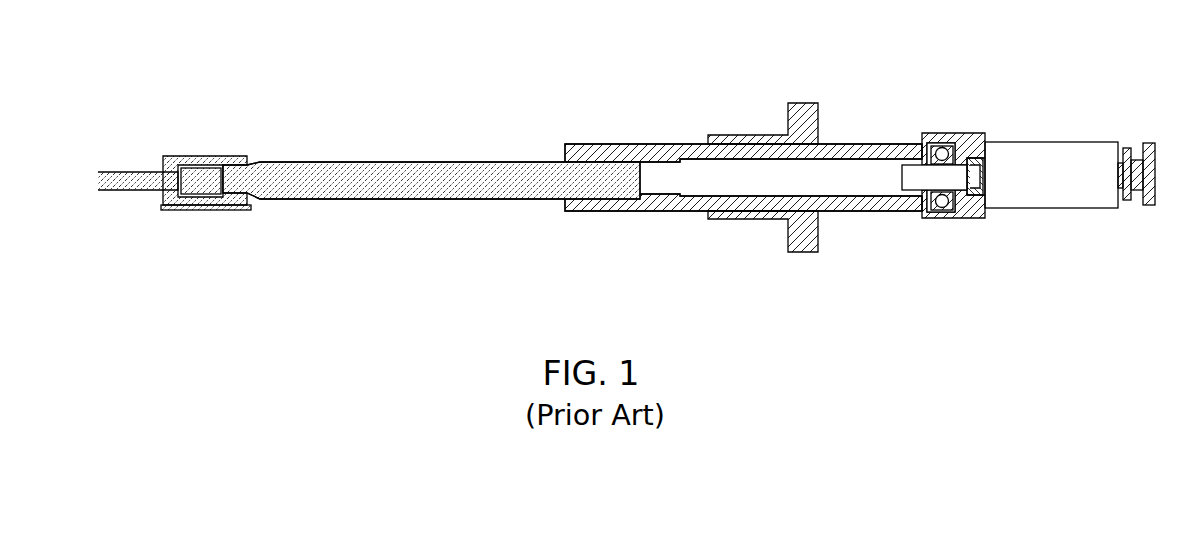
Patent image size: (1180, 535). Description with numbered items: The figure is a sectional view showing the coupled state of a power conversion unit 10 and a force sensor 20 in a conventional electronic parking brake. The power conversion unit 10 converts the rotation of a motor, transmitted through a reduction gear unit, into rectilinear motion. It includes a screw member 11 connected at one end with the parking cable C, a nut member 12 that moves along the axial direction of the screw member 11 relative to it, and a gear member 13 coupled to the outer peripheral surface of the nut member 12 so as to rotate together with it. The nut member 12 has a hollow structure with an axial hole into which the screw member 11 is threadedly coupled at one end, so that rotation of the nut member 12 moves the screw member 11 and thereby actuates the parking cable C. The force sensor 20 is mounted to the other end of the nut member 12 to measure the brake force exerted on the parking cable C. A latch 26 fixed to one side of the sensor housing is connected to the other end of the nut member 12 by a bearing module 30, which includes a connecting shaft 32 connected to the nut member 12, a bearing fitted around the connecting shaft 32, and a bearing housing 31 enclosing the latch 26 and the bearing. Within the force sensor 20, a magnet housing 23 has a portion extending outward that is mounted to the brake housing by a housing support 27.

The power conversion unit 10 is at (541, 141).
The screw member 11 is at (450, 196).
The nut member 12 is at (620, 201).
The gear member 13 is at (800, 112).
The force sensor 20 is at (1087, 150).
The magnet housing 23 is at (945, 136).
The latch 26 is at (982, 178).
The housing support 27 is at (1145, 207).
The bearing module 30 is at (934, 154).
The bearing housing 31 is at (944, 212).
The connecting shaft 32 is at (904, 191).
The parking cable C is at (131, 191).